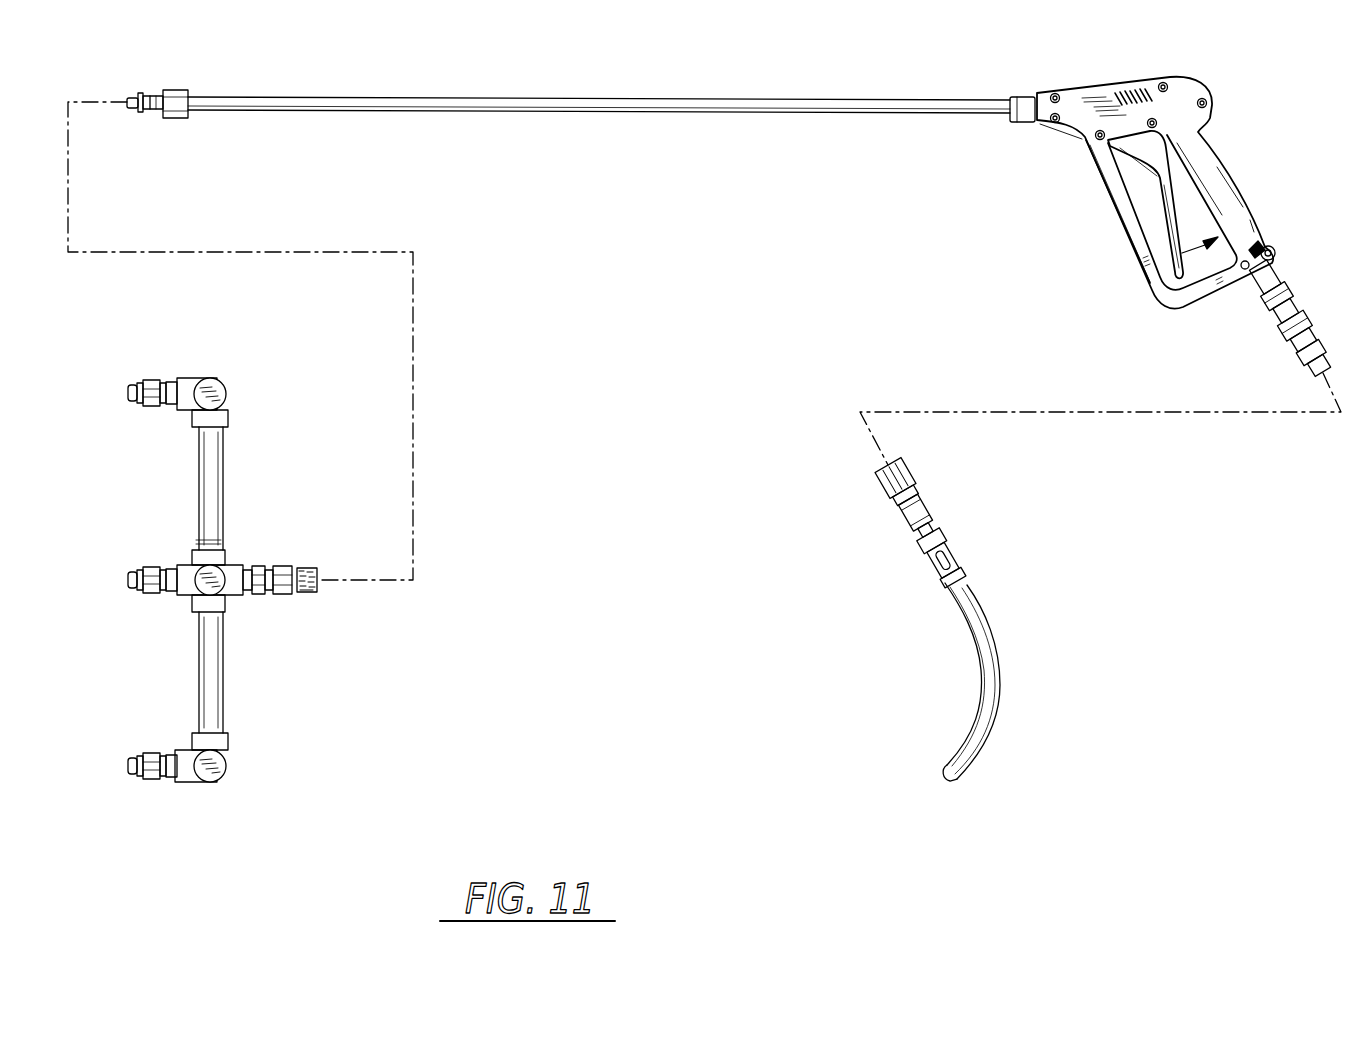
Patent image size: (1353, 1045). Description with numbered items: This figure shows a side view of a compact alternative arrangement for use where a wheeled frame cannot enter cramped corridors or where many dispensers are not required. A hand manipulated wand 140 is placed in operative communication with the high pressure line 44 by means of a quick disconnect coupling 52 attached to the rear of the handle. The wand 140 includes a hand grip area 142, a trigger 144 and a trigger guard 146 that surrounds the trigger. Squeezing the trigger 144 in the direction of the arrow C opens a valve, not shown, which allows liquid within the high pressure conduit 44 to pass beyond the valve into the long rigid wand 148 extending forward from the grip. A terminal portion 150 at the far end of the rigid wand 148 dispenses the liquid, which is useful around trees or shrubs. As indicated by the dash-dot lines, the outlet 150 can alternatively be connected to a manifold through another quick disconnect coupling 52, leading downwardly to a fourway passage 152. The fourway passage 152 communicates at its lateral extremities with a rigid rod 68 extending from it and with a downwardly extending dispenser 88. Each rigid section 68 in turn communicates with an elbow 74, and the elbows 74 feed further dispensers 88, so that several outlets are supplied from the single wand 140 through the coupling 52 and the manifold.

The hand manipulated wand 140 is at (731, 217).
The hand grip area 142 is at (1205, 153).
The trigger 144 is at (1158, 203).
The trigger guard 146 is at (1138, 255).
The rigid wand 148 is at (773, 105).
The terminal portion 150 is at (175, 91).
The fourway passage 152 is at (190, 566).
The elbow 74 is at (220, 381).
The rigid rod 68 is at (210, 476).
The dispenser 88 is at (128, 391).
The coupling 52 is at (318, 592).
The high pressure line 44 is at (997, 638).